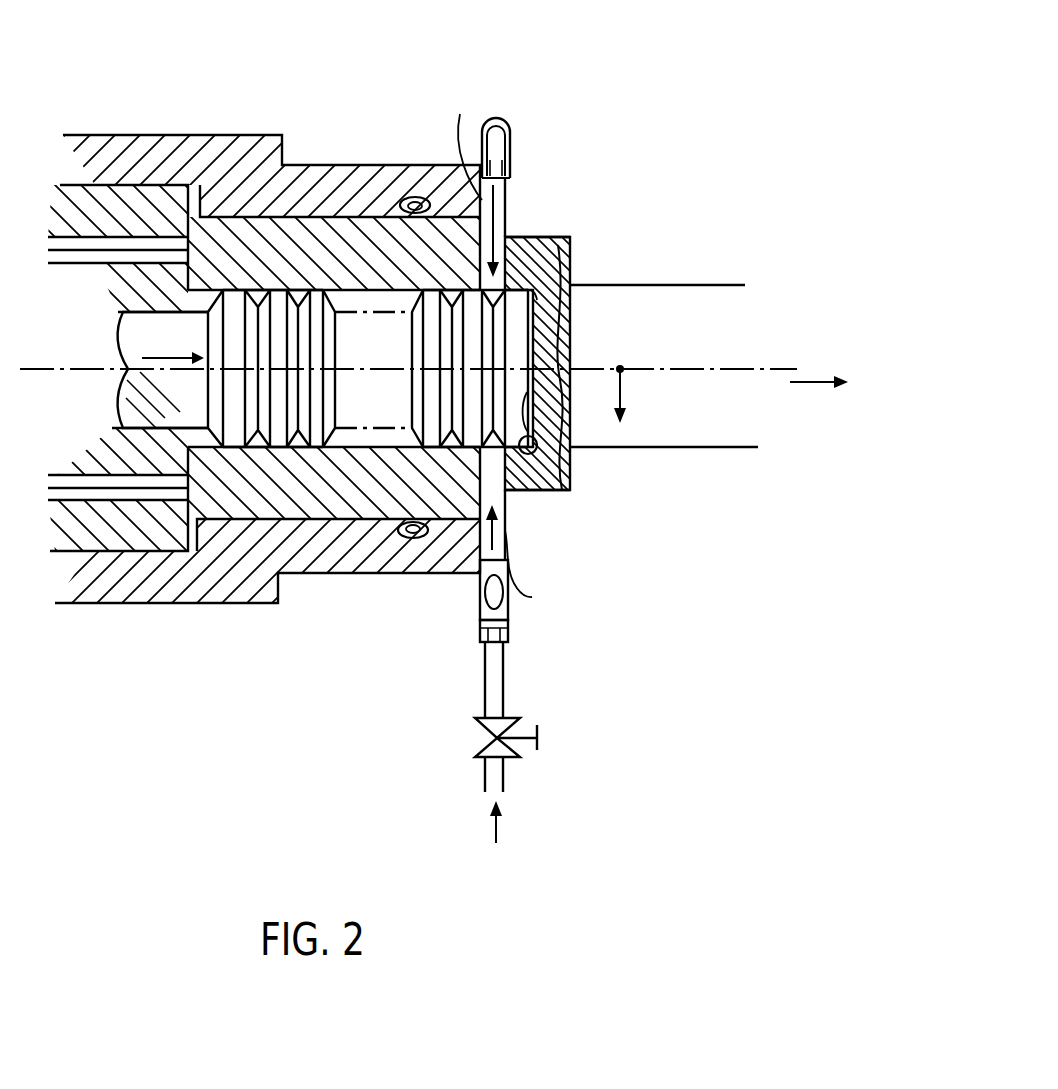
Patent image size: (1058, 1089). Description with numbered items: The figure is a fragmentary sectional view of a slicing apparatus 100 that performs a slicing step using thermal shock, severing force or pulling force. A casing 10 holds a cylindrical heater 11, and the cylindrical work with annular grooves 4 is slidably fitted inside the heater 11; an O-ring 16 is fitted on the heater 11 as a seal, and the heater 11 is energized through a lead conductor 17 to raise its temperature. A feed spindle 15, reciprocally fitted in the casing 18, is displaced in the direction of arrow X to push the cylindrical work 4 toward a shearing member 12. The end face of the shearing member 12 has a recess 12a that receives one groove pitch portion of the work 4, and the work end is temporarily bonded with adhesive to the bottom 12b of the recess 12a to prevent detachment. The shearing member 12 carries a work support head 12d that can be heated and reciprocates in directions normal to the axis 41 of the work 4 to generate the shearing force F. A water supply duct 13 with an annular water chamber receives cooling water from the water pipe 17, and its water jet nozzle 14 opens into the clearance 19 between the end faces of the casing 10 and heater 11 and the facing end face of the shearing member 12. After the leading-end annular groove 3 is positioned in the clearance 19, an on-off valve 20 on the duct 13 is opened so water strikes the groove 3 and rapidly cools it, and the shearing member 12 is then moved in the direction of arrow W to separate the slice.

The slicing apparatus 100 is at (419, 146).
The casing 10 is at (207, 163).
The casing 18 is at (118, 213).
The feed spindle 15 is at (150, 428).
The lead conductor 17 is at (83, 253).
The cylindrical heater 11 is at (333, 243).
The O-ring 16 is at (412, 540).
The cylindrical work with annular grooves 4 is at (236, 425).
The annular groove 3 is at (258, 432).
The water supply duct 13 is at (511, 128).
The water jet nozzle 14 is at (510, 159).
The clearance 19 is at (500, 237).
The shearing member 12 is at (680, 308).
The work support head 12d is at (550, 237).
The bottom of recess 12b is at (540, 448).
The recess 12a is at (553, 490).
The axis 41 is at (760, 369).
The on-off valve 20 is at (543, 738).